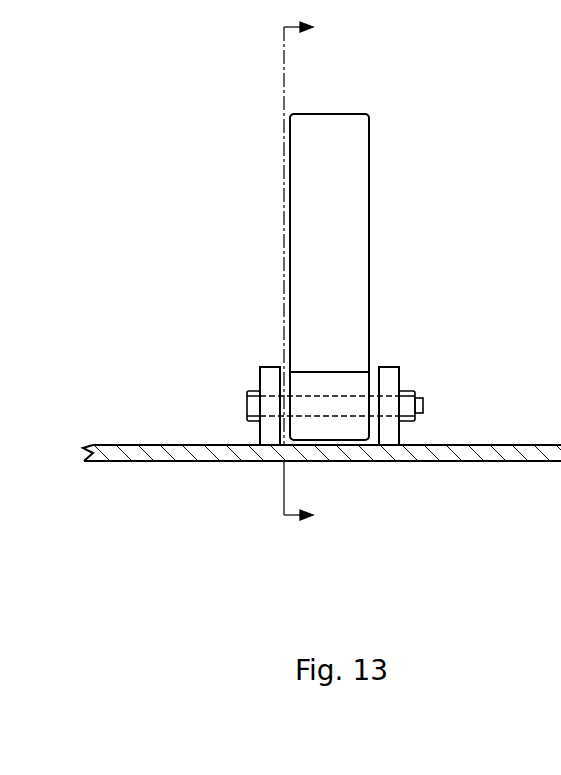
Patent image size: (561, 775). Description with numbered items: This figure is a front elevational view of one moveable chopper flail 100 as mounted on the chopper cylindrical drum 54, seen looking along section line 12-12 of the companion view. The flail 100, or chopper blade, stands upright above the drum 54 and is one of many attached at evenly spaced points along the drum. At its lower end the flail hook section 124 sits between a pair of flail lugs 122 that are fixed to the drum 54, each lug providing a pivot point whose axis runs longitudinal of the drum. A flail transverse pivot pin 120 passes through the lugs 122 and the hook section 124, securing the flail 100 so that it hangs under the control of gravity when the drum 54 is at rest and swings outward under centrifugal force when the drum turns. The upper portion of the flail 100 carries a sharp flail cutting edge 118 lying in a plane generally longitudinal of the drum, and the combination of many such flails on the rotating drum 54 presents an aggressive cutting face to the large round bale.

The section line 12- 12 is at (280, 273).
The chopper cylindrical drum 54 is at (177, 444).
The moveable chopper flail 100 is at (394, 245).
The flail cutting edge 118 is at (326, 113).
The flail transverse pivot pin 120 is at (423, 405).
The flail lug 122 is at (385, 366).
The flail hook section 124 is at (328, 377).